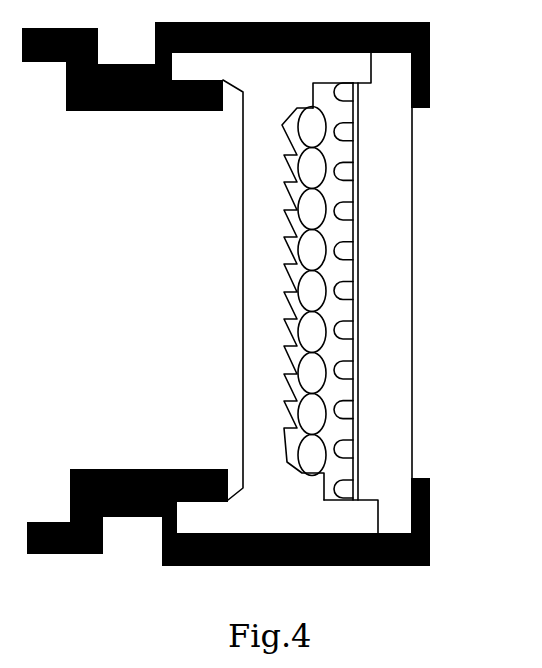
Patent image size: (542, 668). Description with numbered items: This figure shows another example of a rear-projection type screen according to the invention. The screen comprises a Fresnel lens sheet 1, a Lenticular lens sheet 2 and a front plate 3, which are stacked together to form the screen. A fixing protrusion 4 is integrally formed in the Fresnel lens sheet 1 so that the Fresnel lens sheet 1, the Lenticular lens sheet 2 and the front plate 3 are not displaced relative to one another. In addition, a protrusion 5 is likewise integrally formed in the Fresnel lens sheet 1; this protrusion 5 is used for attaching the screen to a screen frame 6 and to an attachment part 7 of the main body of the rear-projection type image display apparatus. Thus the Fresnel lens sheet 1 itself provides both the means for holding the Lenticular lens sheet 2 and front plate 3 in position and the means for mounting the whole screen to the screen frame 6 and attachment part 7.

The Fresnel lens sheet 1 is at (257, 287).
The Lenticular lens sheet 2 is at (332, 332).
The front plate 3 is at (400, 288).
The fixing protrusion 4 is at (343, 67).
The protrusion 5 is at (198, 518).
The screen frame 6 is at (430, 553).
The attachment part 7 is at (112, 469).